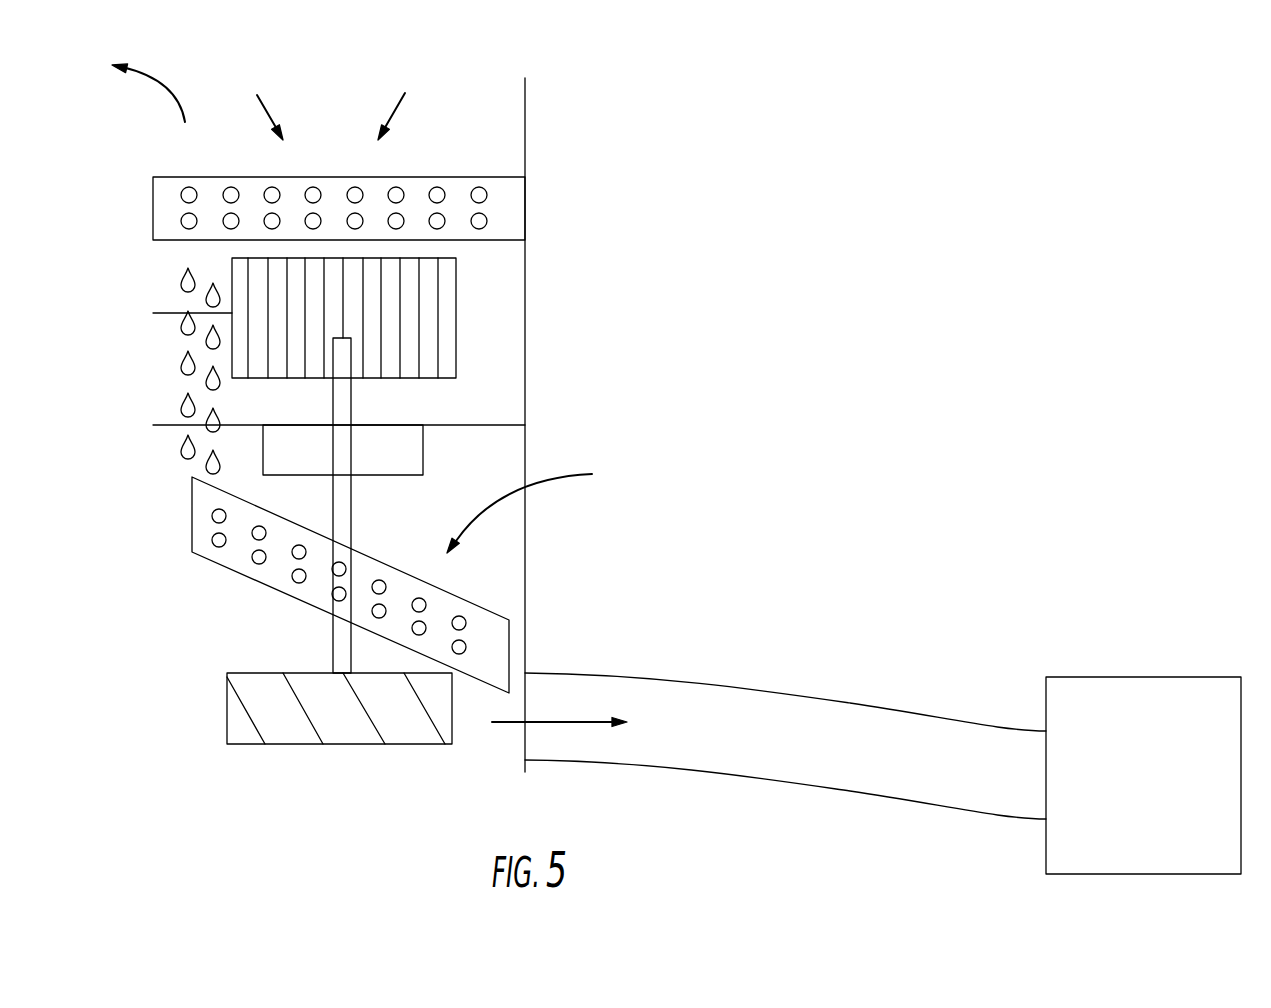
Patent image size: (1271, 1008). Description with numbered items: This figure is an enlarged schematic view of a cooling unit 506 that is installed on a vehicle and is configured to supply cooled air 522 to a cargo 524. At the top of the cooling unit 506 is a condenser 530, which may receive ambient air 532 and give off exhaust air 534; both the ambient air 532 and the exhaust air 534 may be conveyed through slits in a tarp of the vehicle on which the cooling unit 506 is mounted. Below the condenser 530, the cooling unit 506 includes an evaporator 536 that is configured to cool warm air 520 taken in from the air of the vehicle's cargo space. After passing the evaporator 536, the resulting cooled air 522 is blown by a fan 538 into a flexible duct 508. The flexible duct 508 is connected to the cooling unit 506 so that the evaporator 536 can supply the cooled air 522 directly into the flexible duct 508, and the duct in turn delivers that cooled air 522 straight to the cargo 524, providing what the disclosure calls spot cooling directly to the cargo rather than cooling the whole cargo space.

The cooling unit 506 is at (506, 93).
The flexible duct 508 is at (845, 698).
The warm air 520 is at (553, 475).
The cooled air 522 is at (567, 725).
The cargo 524 is at (1162, 788).
The condenser 530 is at (167, 218).
The ambient air 532 is at (268, 108).
The exhaust air 534 is at (165, 92).
The evaporator 536 is at (487, 627).
The fan 538 is at (287, 737).